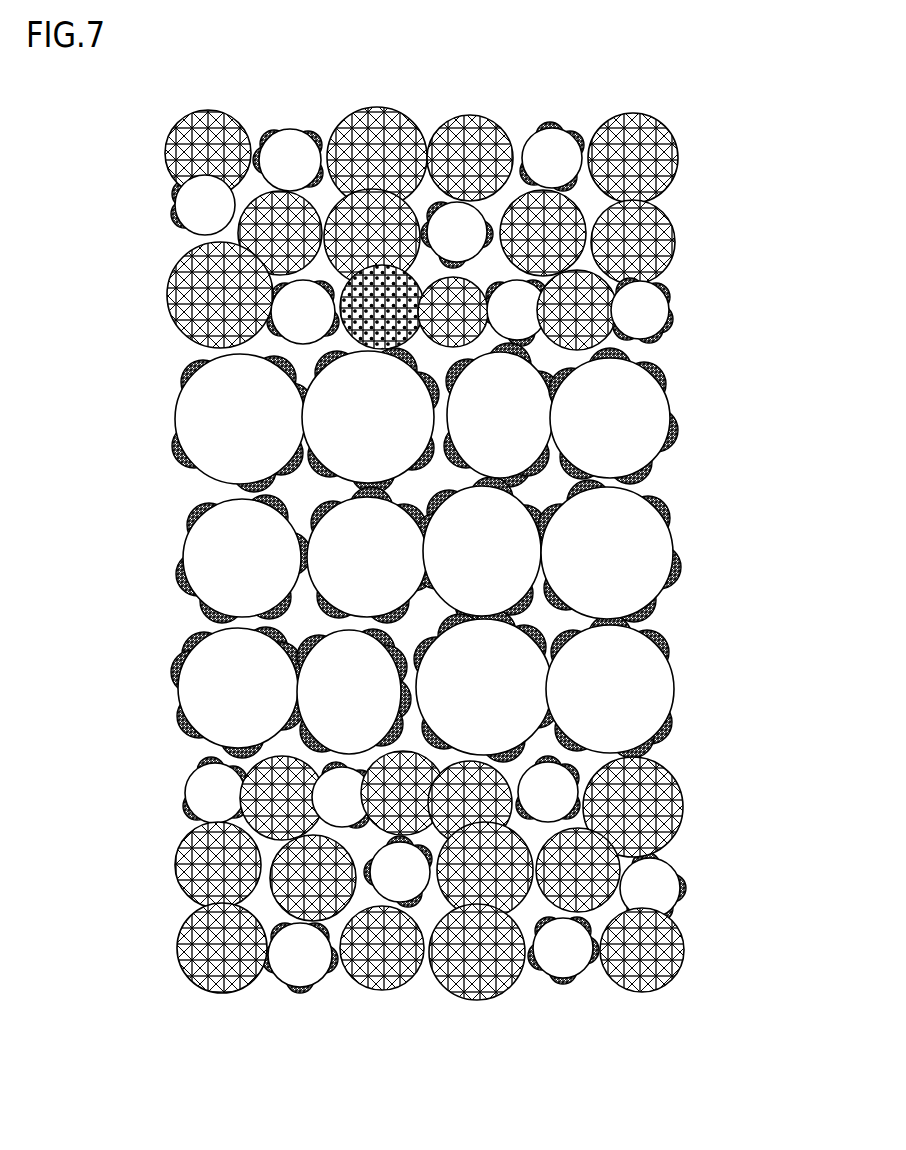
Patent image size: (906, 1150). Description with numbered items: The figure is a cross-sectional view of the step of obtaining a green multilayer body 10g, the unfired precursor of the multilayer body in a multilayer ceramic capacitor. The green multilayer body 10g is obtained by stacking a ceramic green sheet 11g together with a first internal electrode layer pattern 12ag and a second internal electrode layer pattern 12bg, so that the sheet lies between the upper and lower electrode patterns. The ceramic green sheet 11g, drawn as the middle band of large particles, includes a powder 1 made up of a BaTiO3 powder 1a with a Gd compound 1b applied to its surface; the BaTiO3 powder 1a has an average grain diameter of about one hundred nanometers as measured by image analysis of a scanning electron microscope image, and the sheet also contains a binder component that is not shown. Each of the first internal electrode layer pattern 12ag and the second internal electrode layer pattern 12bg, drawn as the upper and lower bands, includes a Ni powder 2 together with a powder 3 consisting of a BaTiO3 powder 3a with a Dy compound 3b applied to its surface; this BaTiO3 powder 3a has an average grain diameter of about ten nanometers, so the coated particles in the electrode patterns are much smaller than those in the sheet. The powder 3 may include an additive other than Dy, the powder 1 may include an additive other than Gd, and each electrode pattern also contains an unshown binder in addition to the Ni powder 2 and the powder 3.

The green multilayer body 10g is at (687, 117).
The first internal electrode layer pattern 12ag is at (152, 122).
The ceramic green sheet 11g is at (152, 355).
The second internal electrode layer pattern 12bg is at (152, 762).
The Ni powder 2 is at (663, 235).
The powder 3 is at (765, 270).
The BaTiO3 powder 3a is at (662, 315).
The Dy compound 3b is at (673, 297).
The powder 1 is at (765, 368).
The BaTiO3 powder 1a is at (653, 407).
The Gd compound 1b is at (663, 370).